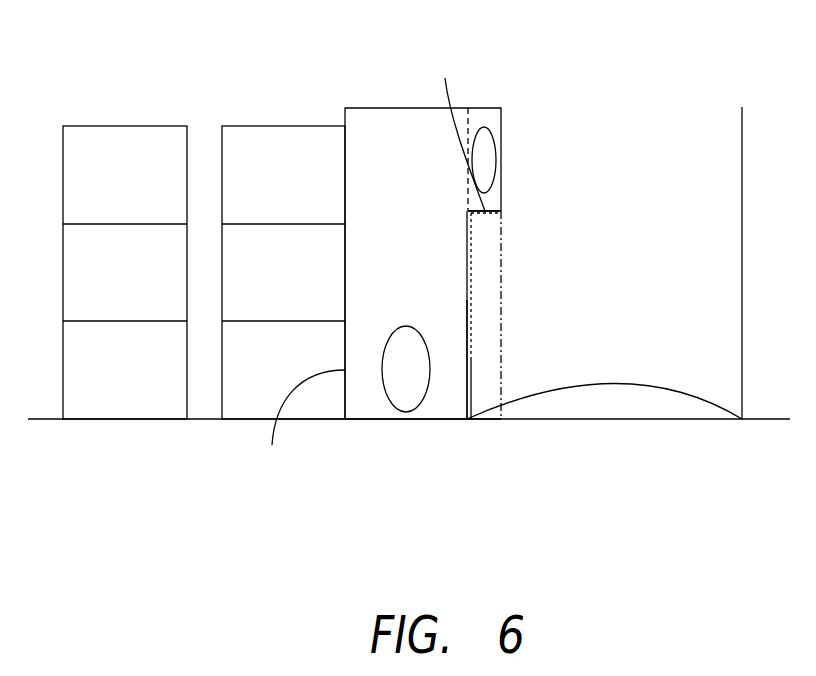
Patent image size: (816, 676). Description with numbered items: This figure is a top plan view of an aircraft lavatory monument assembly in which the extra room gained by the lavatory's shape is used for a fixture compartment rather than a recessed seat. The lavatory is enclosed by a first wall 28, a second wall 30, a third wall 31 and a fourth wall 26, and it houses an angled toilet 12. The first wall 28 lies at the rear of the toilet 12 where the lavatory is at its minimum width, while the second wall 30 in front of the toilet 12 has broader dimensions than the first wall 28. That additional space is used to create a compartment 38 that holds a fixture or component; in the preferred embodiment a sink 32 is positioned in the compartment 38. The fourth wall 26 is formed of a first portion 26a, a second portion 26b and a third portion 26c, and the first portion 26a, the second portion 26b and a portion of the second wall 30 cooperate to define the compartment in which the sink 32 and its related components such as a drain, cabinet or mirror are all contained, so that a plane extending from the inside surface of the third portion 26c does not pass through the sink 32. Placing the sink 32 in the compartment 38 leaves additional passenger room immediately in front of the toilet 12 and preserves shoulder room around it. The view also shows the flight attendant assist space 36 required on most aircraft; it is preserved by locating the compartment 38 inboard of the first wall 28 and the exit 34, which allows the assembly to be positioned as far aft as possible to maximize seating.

The toilet 12 is at (406, 398).
The fourth wall 26 is at (468, 287).
The first portion 26a is at (502, 117).
The second portion 26b is at (453, 131).
The third portion 26c is at (468, 329).
The first wall 28 is at (366, 420).
The second wall 30 is at (379, 108).
The third wall 31 is at (303, 423).
The sink 32 is at (483, 160).
The exit 34 is at (605, 403).
The flight attendant assist space 36 is at (483, 363).
The compartment 38 is at (498, 195).